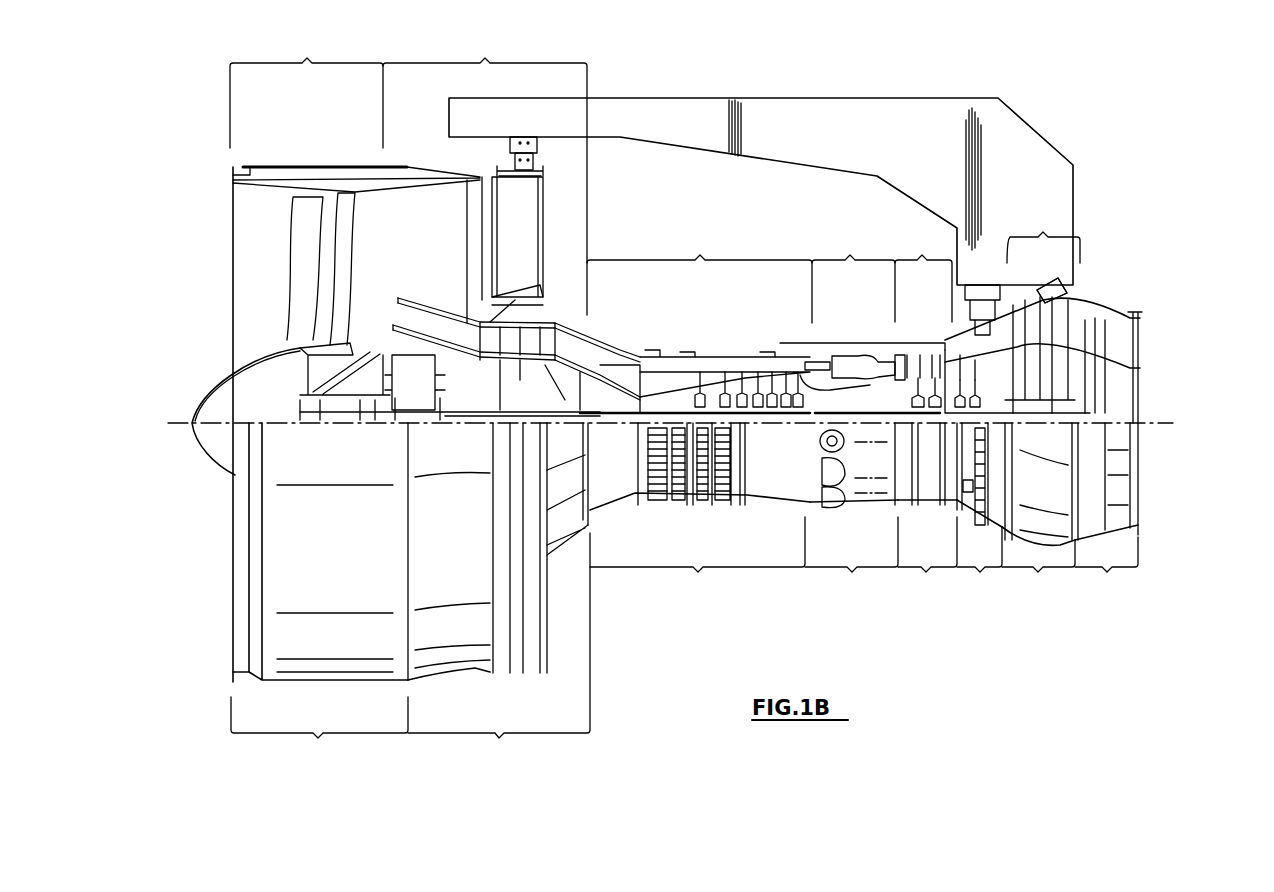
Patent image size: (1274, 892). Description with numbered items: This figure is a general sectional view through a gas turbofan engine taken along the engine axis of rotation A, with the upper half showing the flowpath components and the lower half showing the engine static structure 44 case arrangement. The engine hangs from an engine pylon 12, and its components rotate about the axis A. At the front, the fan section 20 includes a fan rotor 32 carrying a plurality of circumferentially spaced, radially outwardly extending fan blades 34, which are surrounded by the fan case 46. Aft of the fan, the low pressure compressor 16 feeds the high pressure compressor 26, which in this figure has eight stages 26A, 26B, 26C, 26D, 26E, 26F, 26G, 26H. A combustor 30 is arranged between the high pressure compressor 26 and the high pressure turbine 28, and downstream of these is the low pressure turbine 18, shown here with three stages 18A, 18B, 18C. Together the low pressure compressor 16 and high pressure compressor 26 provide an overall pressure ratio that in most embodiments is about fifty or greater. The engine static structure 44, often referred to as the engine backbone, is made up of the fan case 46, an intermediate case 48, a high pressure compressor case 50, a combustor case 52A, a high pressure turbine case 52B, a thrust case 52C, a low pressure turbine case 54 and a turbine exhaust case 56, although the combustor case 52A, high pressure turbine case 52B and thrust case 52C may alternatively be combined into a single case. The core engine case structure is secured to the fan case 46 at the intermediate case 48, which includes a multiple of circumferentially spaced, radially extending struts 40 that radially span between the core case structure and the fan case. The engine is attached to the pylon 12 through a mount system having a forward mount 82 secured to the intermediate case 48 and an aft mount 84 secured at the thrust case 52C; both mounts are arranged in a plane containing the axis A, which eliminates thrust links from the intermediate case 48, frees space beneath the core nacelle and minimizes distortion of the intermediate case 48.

The engine pylon 12 is at (893, 118).
The low pressure compressor 16 is at (485, 175).
The low pressure turbine 18 is at (1053, 383).
The low pressure turbine stage 18A is at (1020, 330).
The low pressure turbine stage 18B is at (1043, 322).
The low pressure turbine stage 18C is at (1072, 337).
The fan section 20 is at (306, 92).
The high pressure compressor 26 is at (738, 334).
The high pressure compressor stage 26A is at (645, 348).
The high pressure compressor stage 26B is at (663, 378).
The high pressure compressor stage 26C is at (695, 365).
The high pressure compressor stage 26D is at (747, 368).
The high pressure compressor stage 26E is at (740, 375).
The high pressure compressor stage 26F is at (793, 362).
The high pressure compressor stage 26G is at (805, 380).
The high pressure compressor stage 26H is at (815, 390).
The high pressure turbine 28 is at (992, 322).
The combustor 30 is at (862, 322).
The fan rotor 32 is at (213, 360).
The fan blades 34 is at (300, 283).
The struts 40 is at (527, 224).
The engine static structure 44 is at (1203, 518).
The fan case 46 is at (319, 594).
The intermediate case 48 is at (499, 594).
The high pressure compressor case 50 is at (700, 511).
The combustor case 52A is at (851, 515).
The high pressure turbine case 52B is at (926, 511).
The thrust case 52C is at (980, 511).
The low pressure turbine case 54 is at (1040, 511).
The turbine exhaust case 56 is at (1106, 511).
The forward mount 82 is at (542, 140).
The aft mount 84 is at (1095, 284).
The engine axis of rotation A is at (1160, 423).